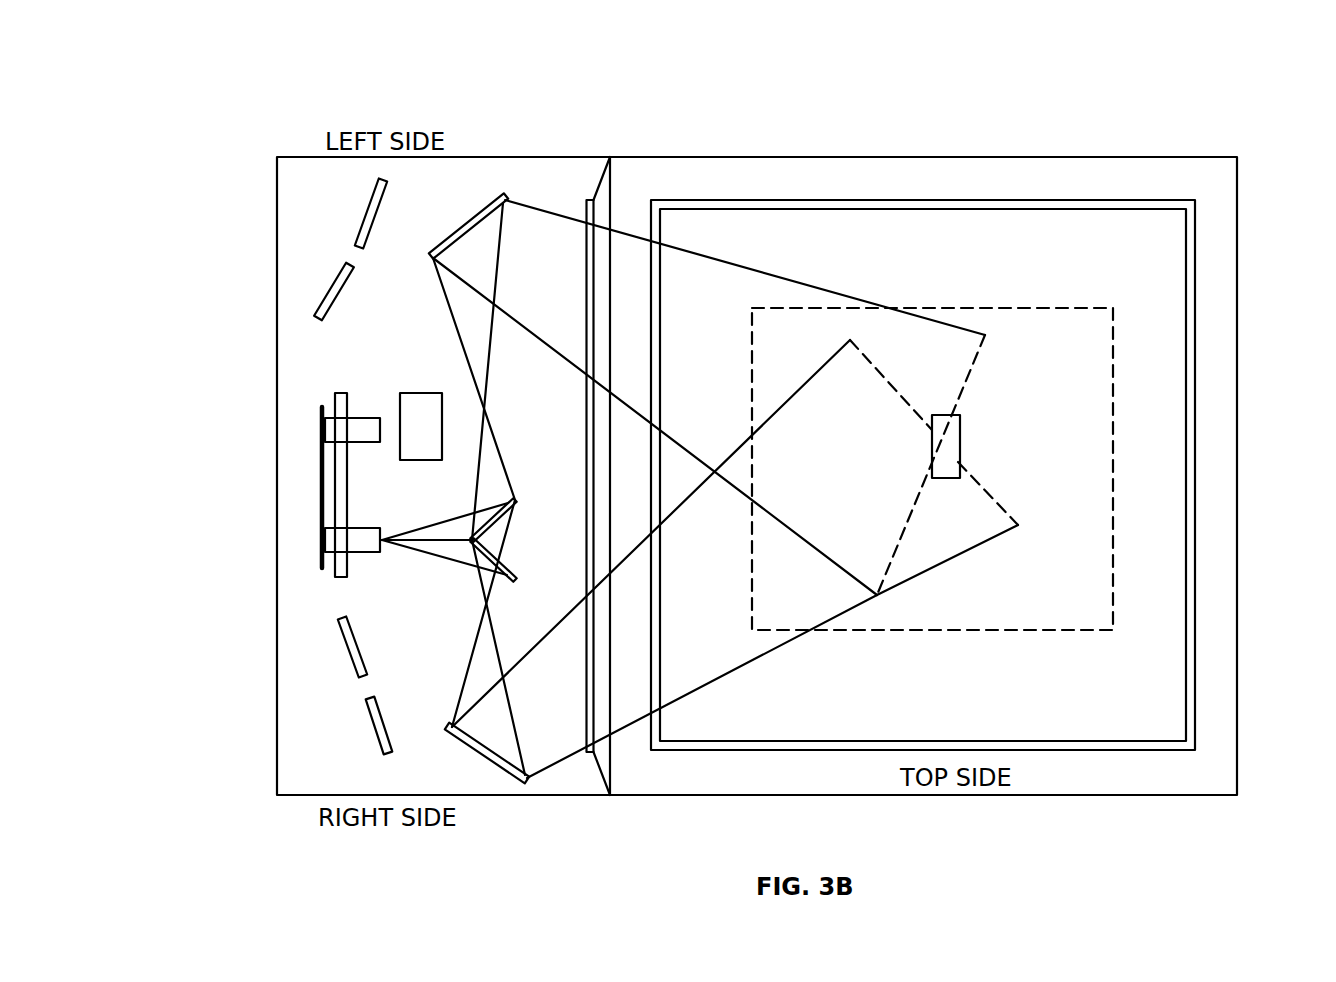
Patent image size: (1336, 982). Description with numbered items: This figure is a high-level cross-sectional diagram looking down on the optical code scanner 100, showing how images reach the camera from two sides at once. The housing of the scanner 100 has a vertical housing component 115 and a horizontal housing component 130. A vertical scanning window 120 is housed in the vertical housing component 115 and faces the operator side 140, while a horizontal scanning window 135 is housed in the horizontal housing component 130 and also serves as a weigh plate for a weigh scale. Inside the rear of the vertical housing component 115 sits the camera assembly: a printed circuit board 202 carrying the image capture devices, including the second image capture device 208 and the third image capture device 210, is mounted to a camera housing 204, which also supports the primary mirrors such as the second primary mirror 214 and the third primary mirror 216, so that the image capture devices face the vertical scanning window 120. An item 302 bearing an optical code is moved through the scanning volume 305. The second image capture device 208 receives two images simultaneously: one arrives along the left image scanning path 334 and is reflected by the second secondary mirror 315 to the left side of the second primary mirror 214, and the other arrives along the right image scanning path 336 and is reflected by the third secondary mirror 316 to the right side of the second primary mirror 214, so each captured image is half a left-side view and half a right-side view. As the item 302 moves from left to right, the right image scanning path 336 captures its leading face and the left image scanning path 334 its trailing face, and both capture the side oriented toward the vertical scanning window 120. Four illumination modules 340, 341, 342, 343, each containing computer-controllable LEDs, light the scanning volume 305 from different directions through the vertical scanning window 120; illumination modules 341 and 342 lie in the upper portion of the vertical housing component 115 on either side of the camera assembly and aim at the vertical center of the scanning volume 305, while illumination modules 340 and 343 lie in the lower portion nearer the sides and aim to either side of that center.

The optical code scanner 100 is at (180, 70).
The vertical housing component 115 is at (275, 600).
The vertical scanning window 120 is at (589, 198).
The horizontal housing component 130 is at (958, 182).
The horizontal scanning window 135 is at (1128, 232).
The operator side 140 is at (1238, 585).
The printed circuit board 202 is at (322, 468).
The camera housing 204 is at (338, 394).
The second image capture device 208 is at (355, 540).
The third image capture device 210 is at (358, 429).
The second primary mirror 214 is at (512, 500).
The third primary mirror 216 is at (421, 392).
The item 302 is at (960, 433).
The scanning volume 305 is at (1020, 308).
The second secondary mirror 315 is at (457, 232).
The third secondary mirror 316 is at (456, 735).
The left image scanning path 334 is at (772, 280).
The right image scanning path 336 is at (750, 665).
The illumination module 340 is at (360, 207).
The illumination module 341 is at (342, 283).
The illumination module 342 is at (338, 652).
The illumination module 343 is at (366, 722).